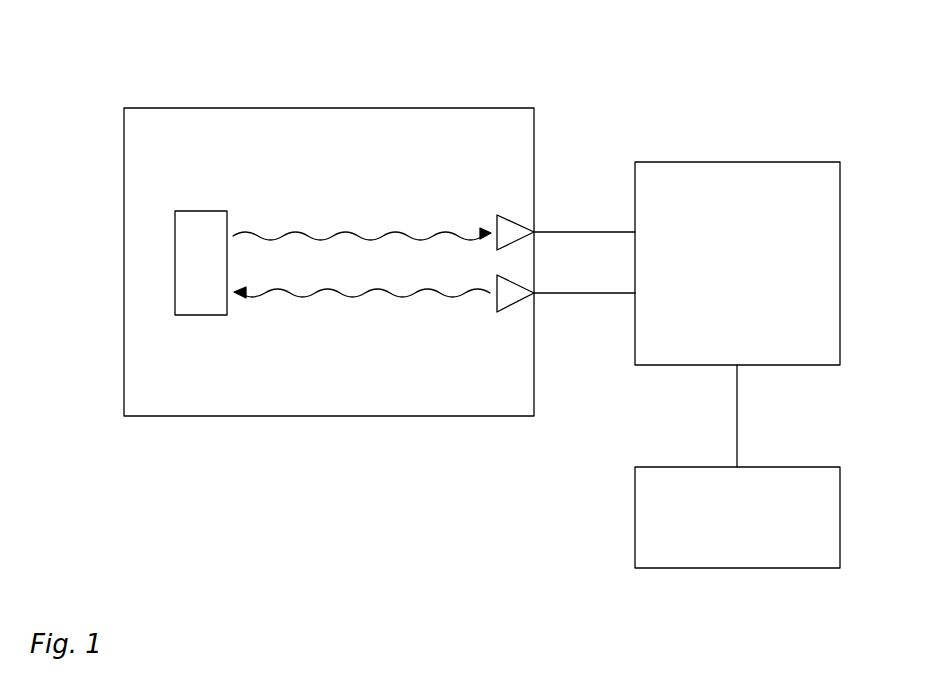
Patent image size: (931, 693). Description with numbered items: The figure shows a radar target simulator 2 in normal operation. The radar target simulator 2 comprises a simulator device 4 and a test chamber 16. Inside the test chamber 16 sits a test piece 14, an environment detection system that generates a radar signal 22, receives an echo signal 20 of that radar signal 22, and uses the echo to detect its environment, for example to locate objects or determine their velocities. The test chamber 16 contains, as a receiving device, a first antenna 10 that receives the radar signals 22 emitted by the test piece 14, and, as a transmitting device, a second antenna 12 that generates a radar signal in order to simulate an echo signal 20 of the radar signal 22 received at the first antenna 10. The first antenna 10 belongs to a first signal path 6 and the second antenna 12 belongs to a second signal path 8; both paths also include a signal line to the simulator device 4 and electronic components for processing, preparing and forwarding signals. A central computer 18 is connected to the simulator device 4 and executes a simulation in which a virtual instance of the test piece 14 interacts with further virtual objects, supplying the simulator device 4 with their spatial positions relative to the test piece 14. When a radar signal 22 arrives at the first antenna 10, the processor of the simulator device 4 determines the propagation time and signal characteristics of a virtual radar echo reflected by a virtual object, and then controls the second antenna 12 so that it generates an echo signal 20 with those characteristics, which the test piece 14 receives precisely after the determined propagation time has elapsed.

The radar target simulator 2 is at (422, 491).
The simulator device 4 is at (790, 162).
The first signal path 6 is at (584, 198).
The second signal path 8 is at (601, 336).
The first antenna 10 is at (508, 216).
The second antenna 12 is at (517, 302).
The test piece 14 is at (202, 211).
The test chamber 16 is at (343, 108).
The central computer 18 is at (635, 540).
The echo signal 20 is at (341, 296).
The radar signal 22 is at (340, 233).